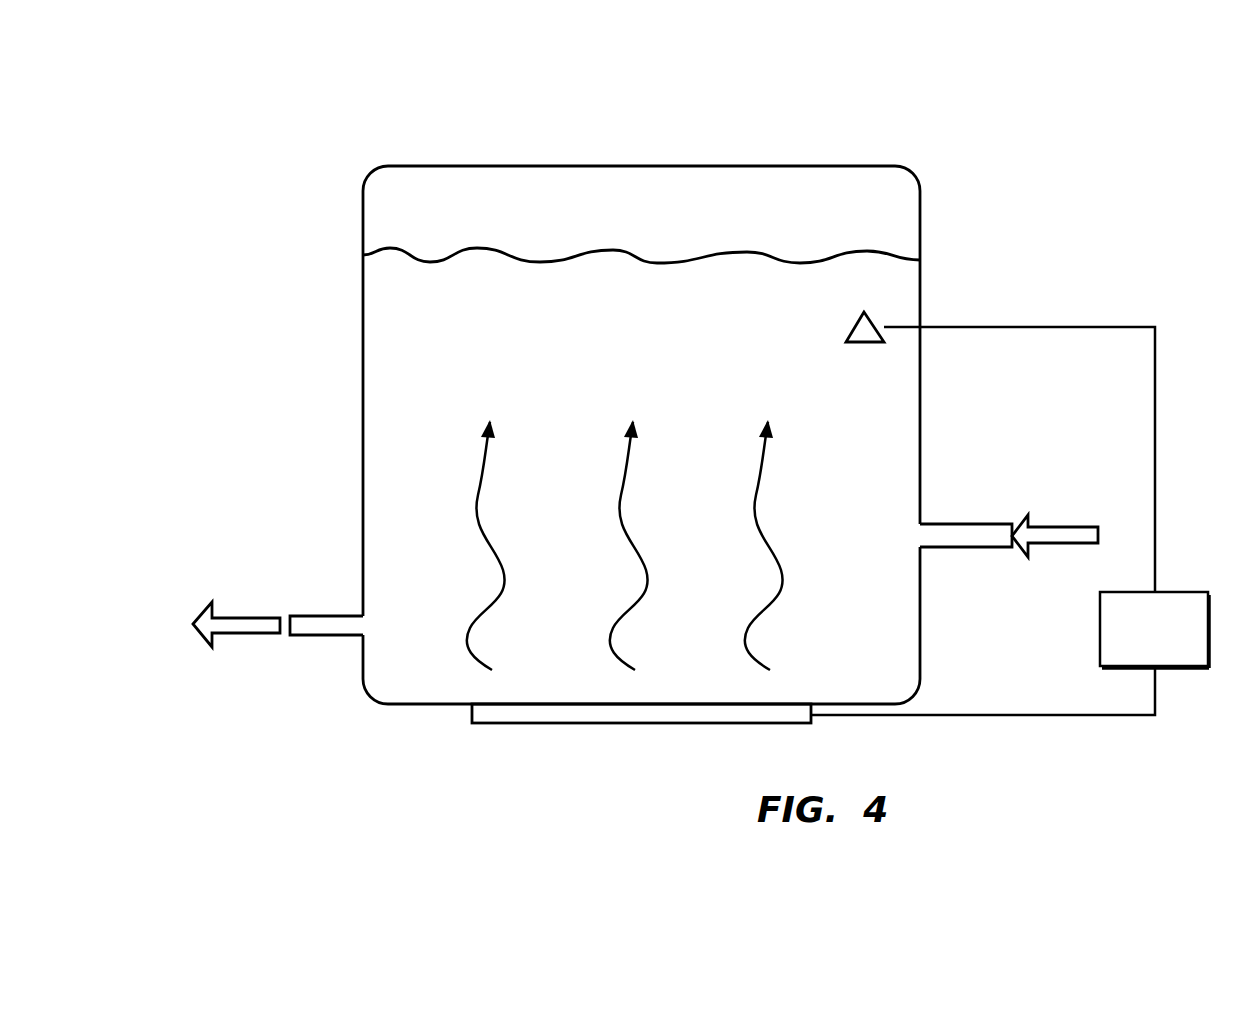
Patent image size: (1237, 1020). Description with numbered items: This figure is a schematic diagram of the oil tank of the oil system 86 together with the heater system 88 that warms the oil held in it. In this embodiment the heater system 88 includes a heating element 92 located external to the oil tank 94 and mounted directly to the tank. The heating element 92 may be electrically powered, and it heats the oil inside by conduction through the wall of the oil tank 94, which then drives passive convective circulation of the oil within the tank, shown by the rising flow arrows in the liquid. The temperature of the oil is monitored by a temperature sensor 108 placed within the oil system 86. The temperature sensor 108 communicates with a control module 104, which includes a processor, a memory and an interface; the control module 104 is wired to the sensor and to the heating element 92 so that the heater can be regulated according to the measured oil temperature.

The oil system 86 is at (738, 137).
The heater system 88 is at (1172, 167).
The heating element 92 is at (565, 723).
The oil tank 94 is at (847, 165).
The control module 104 is at (1010, 521).
The temperature sensor 108 is at (853, 325).